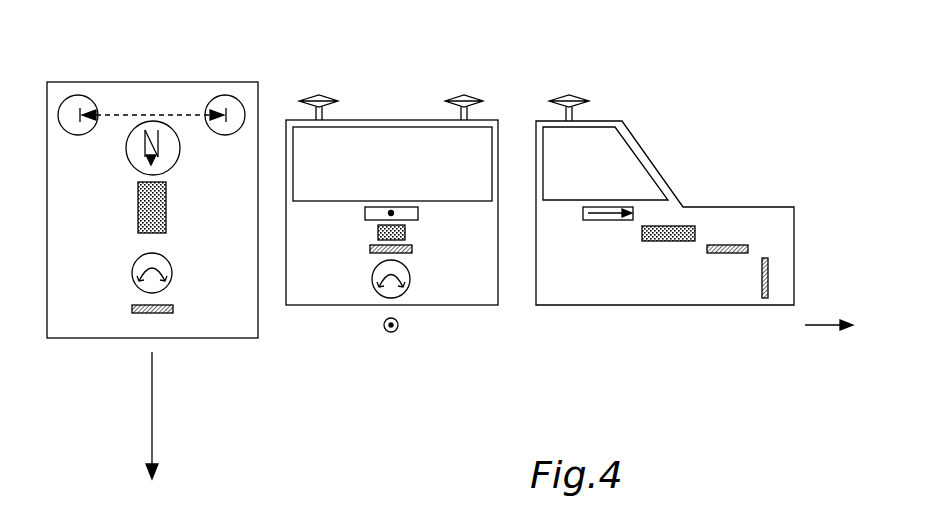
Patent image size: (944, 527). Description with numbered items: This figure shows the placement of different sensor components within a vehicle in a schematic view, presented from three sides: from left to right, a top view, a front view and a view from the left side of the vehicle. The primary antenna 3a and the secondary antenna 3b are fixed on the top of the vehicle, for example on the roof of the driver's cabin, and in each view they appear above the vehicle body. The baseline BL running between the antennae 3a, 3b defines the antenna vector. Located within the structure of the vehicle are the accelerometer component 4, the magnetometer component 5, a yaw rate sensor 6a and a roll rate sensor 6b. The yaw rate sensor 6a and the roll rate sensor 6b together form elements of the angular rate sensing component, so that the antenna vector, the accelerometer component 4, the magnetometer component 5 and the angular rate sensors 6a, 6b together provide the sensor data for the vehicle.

The primary antenna 3a is at (368, 70).
The secondary antenna 3b is at (310, 87).
The baseline BL is at (153, 101).
The magnetometer component 5 is at (410, 191).
The accelerometer component 4 is at (444, 210).
The yaw rate sensor 6a is at (482, 235).
The roll rate sensor 6b is at (450, 301).